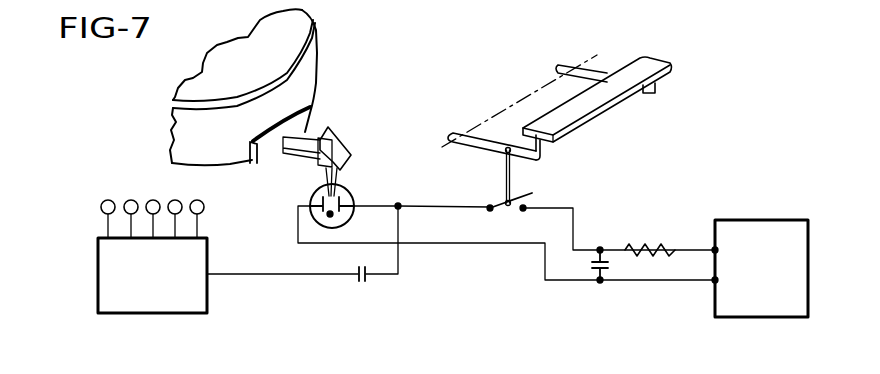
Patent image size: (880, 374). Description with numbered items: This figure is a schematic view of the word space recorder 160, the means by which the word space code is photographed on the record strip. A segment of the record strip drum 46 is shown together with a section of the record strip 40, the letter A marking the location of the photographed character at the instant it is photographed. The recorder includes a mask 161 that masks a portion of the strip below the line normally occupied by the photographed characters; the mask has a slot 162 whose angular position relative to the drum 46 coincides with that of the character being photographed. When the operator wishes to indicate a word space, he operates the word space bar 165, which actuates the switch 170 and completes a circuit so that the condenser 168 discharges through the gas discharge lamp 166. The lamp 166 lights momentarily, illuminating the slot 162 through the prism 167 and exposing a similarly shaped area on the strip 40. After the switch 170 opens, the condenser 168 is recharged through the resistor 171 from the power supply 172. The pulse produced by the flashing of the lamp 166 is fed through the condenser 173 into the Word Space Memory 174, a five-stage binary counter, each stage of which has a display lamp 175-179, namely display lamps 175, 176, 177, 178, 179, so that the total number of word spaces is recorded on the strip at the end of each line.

The record strip 40 is at (181, 128).
The record strip drum 46 is at (197, 80).
The mask 161 is at (252, 160).
The slot 162 is at (280, 158).
The prism 167 is at (340, 142).
The gas discharge lamp 166 is at (327, 223).
The word space recorder 160 is at (411, 170).
The word space bar 165 is at (648, 60).
The switch 170 is at (530, 200).
The resistor 171 is at (652, 240).
The power supply 172 is at (752, 228).
The condenser 168 is at (590, 266).
The condenser 173 is at (362, 284).
The Word Space Memory 174 is at (115, 308).
The display lamps 175-179 is at (128, 198).
The display lamp 175 is at (108, 219).
The display lamp 176 is at (131, 219).
The display lamp 177 is at (153, 219).
The display lamp 178 is at (175, 219).
The display lamp 179 is at (197, 219).